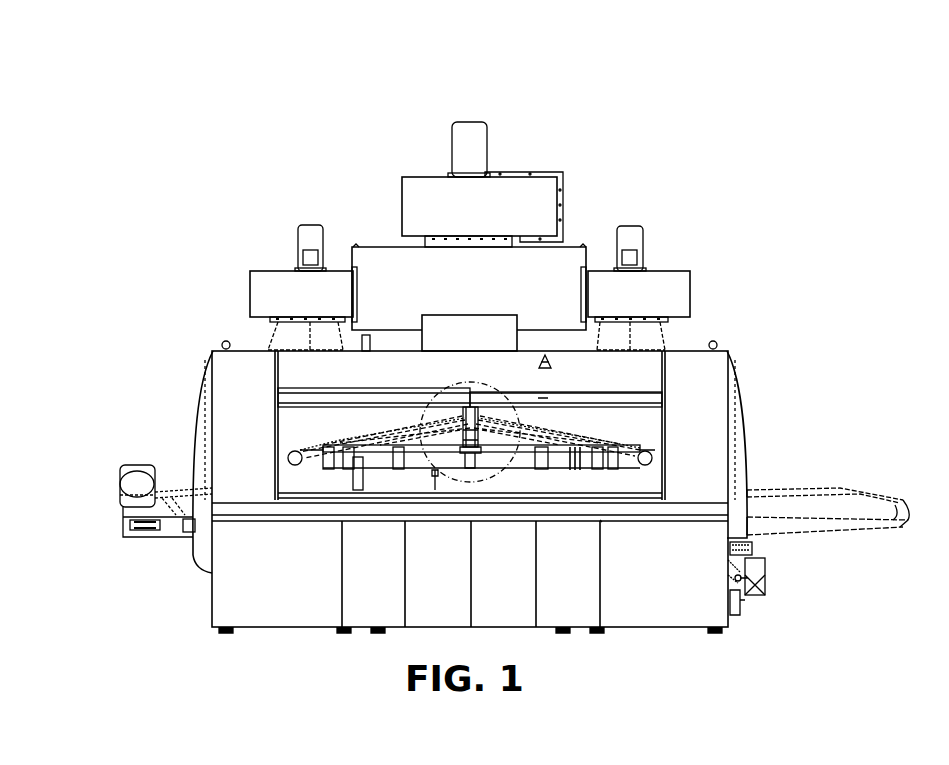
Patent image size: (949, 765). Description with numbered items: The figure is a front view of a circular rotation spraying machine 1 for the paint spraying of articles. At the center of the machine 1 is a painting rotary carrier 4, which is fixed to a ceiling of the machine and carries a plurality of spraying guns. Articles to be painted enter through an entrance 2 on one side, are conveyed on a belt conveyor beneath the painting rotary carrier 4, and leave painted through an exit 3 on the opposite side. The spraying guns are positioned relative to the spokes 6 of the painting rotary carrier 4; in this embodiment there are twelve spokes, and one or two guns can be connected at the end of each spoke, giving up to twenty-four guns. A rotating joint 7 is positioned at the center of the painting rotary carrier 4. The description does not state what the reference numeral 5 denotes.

The circular rotation spraying machine 1 is at (320, 168).
The entrance 2 is at (186, 483).
The exit 3 is at (767, 483).
The painting rotary carrier 4 is at (385, 433).
The clamping units 5 is at (587, 463).
The spokes 6 is at (565, 425).
The rotating joint 7 is at (473, 418).